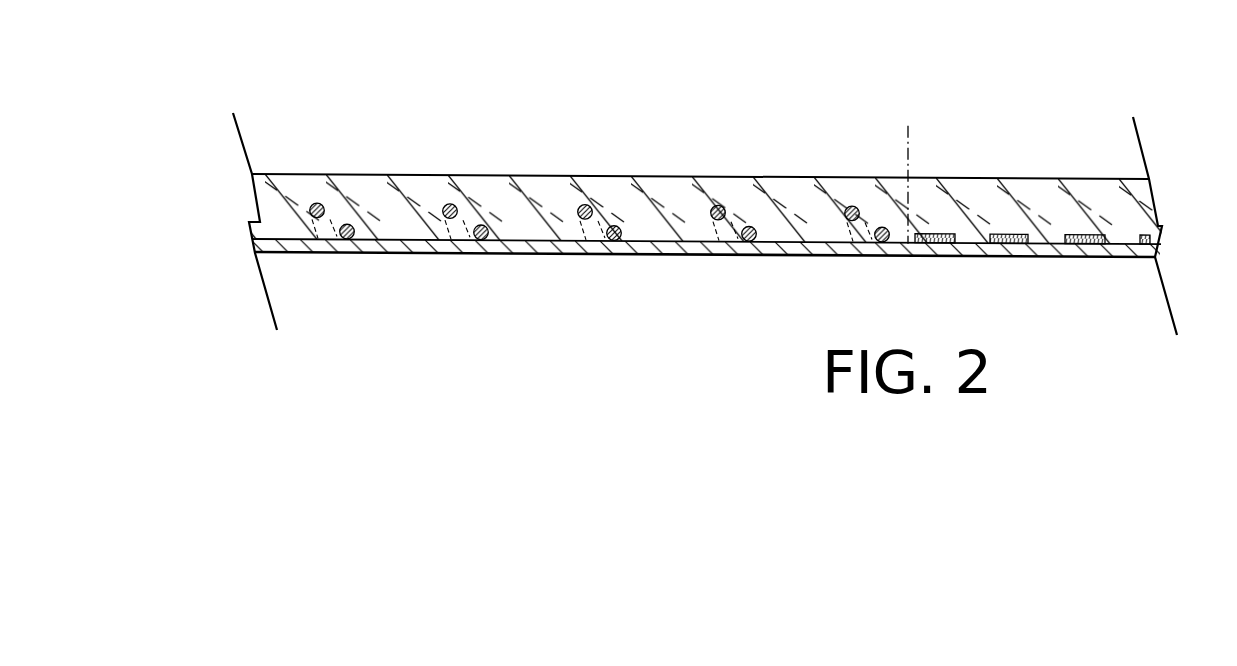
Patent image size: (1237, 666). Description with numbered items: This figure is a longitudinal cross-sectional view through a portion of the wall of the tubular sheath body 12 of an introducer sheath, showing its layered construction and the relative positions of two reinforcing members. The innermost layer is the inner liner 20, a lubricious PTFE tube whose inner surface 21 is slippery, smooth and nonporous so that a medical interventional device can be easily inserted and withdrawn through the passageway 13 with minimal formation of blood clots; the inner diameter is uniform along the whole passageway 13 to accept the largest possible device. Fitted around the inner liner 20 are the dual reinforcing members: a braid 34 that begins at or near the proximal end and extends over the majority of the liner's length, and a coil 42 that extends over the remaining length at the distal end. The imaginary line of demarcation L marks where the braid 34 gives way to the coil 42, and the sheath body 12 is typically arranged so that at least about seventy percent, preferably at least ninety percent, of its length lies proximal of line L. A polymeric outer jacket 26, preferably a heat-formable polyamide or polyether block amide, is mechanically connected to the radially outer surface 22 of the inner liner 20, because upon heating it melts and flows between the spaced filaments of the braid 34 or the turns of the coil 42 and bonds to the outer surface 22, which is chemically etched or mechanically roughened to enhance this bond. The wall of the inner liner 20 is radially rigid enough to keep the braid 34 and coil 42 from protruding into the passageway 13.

The tubular sheath body 12 is at (762, 167).
The passageway 13 is at (535, 313).
The inner liner 20 is at (1052, 250).
The inner surface 21 is at (607, 254).
The outer surface 22 is at (973, 242).
The outer jacket 26 is at (665, 208).
The braid 34 is at (475, 233).
The coil 42 is at (1071, 232).
The line of demarcation L is at (905, 201).